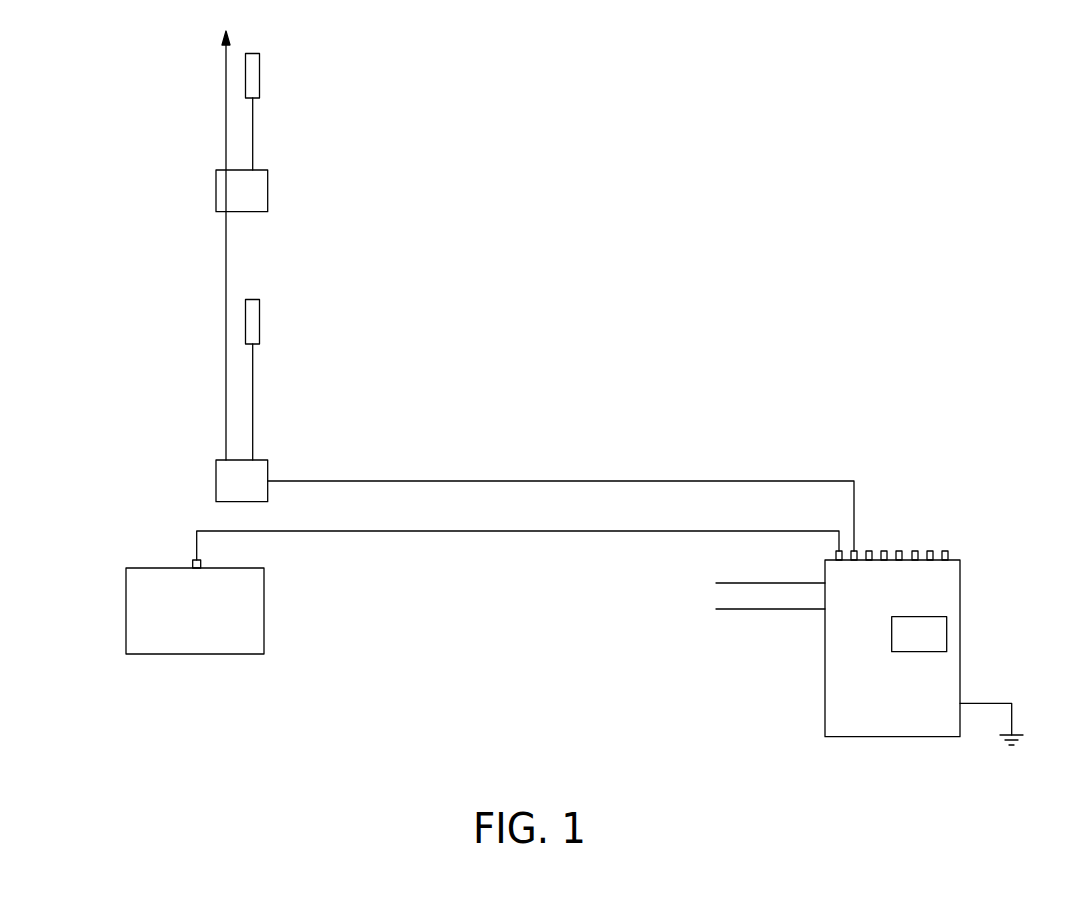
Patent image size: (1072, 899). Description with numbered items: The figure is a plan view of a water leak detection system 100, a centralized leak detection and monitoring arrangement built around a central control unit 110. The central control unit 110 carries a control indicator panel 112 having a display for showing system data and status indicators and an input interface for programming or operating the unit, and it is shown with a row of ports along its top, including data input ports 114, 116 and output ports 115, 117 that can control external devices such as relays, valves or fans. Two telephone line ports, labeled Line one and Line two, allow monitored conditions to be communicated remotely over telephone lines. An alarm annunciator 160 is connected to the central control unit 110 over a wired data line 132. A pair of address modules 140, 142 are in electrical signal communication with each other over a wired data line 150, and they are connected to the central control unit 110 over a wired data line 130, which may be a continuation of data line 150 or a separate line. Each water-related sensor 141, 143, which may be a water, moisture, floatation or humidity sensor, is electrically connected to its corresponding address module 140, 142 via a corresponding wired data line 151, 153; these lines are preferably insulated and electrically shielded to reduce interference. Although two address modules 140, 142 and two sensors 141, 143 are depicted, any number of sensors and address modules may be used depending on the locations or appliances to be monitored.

The water leak detection system 100 is at (607, 185).
The central control unit 110 is at (825, 668).
The control indicator panel 112 is at (927, 633).
The data input port 114 is at (854, 551).
The output port 115 is at (837, 551).
The data input port 116 is at (930, 551).
The output port 117 is at (945, 551).
The wired data line 130 is at (548, 481).
The wired data line 132 is at (452, 531).
The address module 140 is at (216, 479).
The water-related sensor 141 is at (260, 322).
The address module 142 is at (216, 190).
The water-related sensor 143 is at (260, 77).
The wired data line 150 is at (226, 101).
The wired data line 151 is at (253, 395).
The wired data line 153 is at (253, 135).
The alarm annunciator 160 is at (126, 612).